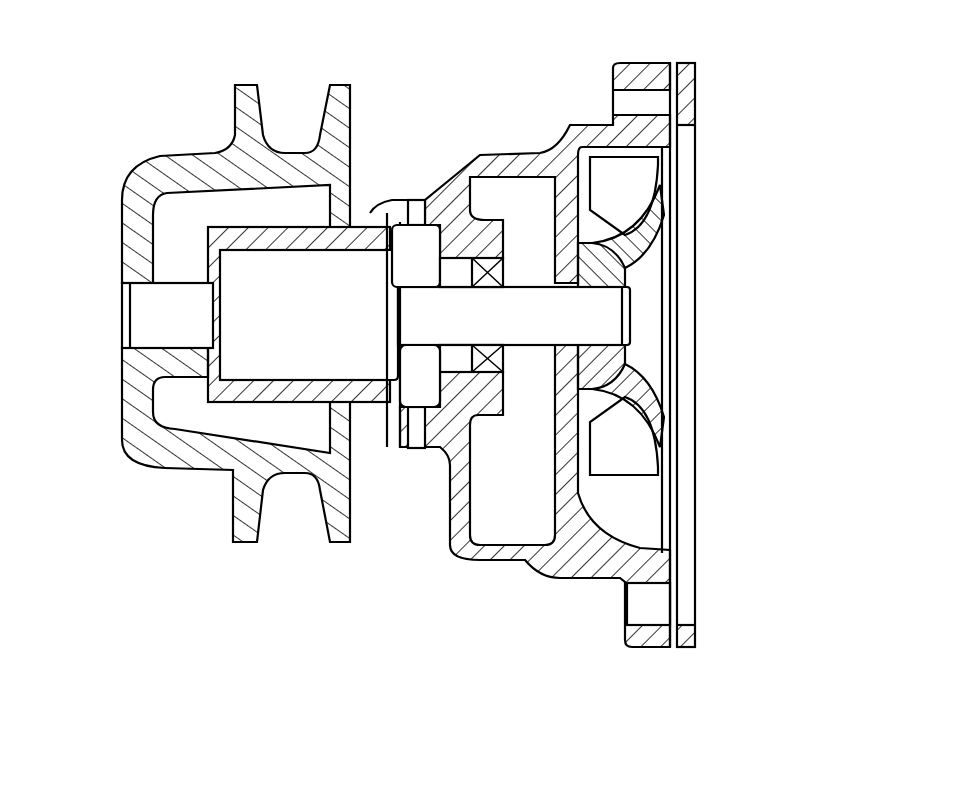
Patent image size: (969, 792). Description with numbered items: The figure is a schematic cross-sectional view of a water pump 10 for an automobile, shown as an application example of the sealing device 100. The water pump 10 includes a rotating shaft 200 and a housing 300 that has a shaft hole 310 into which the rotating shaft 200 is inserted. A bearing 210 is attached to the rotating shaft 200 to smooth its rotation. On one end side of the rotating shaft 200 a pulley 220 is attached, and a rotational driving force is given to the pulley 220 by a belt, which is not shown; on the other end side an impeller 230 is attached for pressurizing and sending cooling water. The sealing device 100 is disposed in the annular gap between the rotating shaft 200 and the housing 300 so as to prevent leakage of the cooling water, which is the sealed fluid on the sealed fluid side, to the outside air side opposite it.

The water pump 10 is at (753, 78).
The sealing device 100 is at (480, 257).
The rotating shaft 200 is at (537, 300).
The bearing 210 is at (240, 325).
The pulley 220 is at (160, 450).
The impeller 230 is at (643, 392).
The housing 300 is at (543, 557).
The shaft hole 310 is at (433, 355).